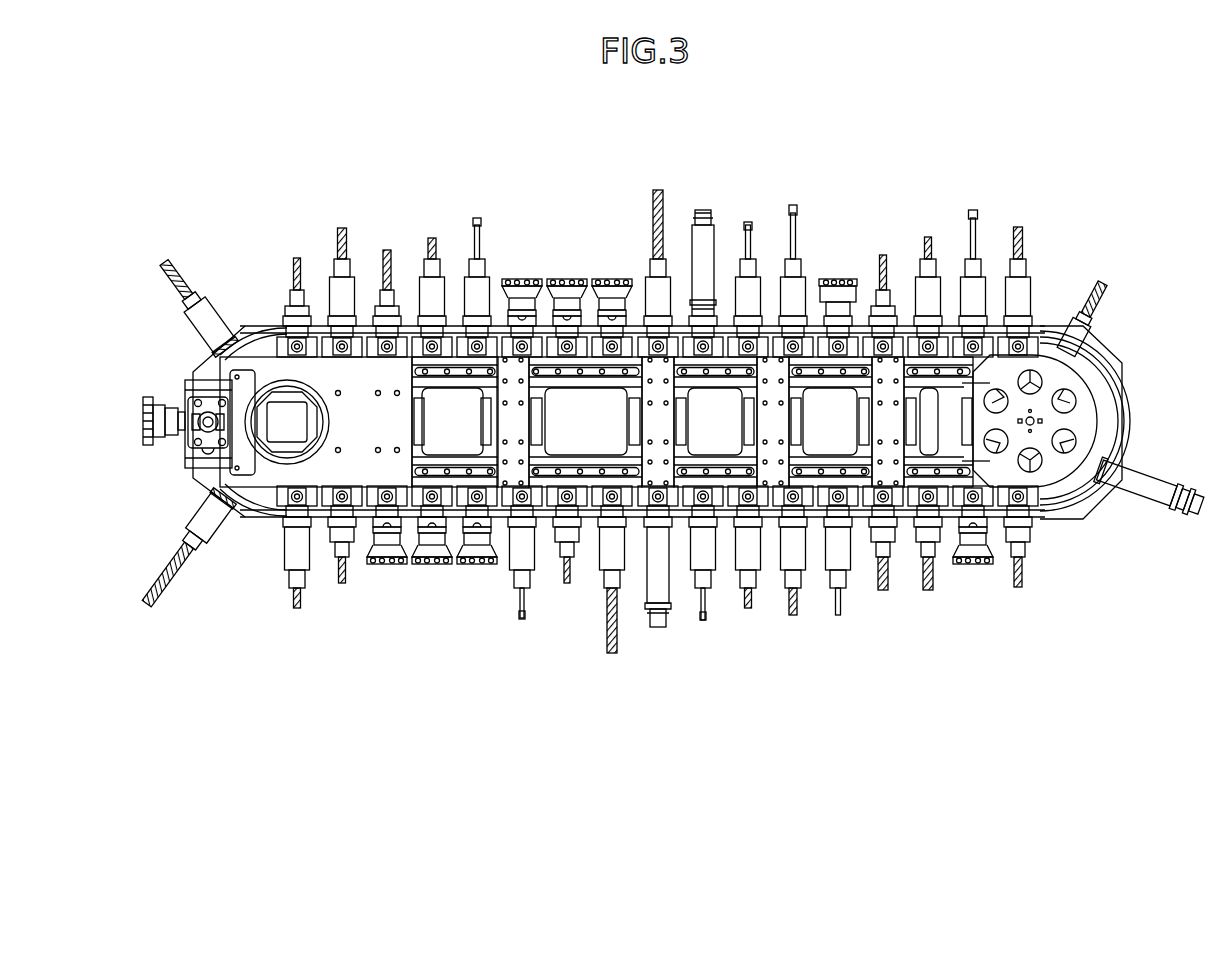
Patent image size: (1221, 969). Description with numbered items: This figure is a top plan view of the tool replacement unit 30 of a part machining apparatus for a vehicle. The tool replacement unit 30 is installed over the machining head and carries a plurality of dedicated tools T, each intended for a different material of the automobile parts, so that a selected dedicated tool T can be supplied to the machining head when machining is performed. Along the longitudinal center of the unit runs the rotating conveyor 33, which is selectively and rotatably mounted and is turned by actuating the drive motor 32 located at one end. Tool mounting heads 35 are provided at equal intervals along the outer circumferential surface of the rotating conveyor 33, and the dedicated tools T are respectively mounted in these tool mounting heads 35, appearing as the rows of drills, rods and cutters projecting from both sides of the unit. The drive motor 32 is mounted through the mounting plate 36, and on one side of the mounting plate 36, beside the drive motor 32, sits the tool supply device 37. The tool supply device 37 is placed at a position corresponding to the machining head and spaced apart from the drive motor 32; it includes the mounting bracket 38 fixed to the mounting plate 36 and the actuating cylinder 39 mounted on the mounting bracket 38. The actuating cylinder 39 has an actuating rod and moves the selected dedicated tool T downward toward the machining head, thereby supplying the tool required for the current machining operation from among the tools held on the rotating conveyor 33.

The tool replacement unit 30 is at (1042, 188).
The drive motor 32 is at (284, 432).
The rotating conveyor 33 is at (975, 395).
The tool mounting heads 35 is at (1033, 333).
The mounting plate 36 is at (333, 378).
The tool supply device 37 is at (183, 456).
The mounting bracket 38 is at (218, 387).
The actuating cylinder 39 is at (205, 420).
The dedicated tools T is at (553, 280).